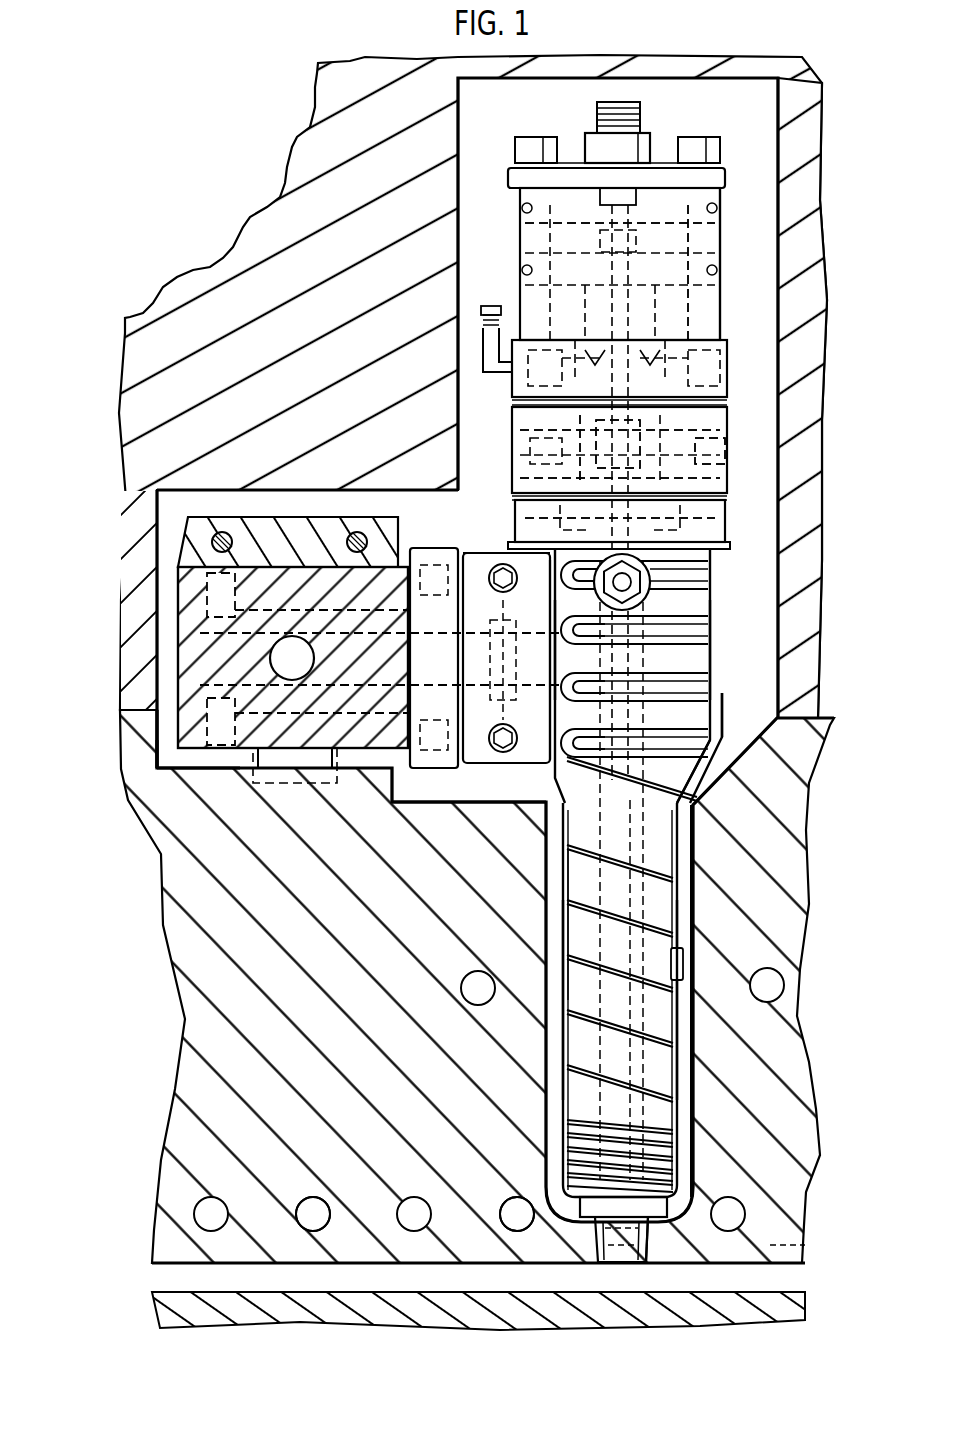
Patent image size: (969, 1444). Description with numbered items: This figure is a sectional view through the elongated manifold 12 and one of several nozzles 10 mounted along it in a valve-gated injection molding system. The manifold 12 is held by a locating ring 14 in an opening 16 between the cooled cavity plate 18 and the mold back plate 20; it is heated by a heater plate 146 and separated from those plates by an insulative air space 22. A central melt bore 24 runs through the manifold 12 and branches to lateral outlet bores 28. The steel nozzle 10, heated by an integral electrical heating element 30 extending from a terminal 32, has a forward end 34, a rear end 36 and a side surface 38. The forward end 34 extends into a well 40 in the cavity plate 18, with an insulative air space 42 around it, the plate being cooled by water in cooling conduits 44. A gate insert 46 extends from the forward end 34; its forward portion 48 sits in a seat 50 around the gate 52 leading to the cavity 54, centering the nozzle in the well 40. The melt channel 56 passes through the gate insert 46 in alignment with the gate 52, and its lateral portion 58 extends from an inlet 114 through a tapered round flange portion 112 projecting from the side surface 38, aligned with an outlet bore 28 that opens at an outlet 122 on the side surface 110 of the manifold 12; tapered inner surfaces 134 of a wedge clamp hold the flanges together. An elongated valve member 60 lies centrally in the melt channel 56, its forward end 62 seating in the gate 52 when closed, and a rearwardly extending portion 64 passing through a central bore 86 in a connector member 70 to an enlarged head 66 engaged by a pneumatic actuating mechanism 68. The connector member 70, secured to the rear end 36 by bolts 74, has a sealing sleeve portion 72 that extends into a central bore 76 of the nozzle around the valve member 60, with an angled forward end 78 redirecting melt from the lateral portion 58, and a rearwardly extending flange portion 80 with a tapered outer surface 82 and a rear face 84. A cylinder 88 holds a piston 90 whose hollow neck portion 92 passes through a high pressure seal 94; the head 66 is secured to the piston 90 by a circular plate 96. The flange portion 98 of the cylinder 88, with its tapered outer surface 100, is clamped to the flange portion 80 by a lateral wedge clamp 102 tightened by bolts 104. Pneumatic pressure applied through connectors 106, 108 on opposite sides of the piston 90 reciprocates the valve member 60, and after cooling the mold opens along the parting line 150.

The nozzle 10 is at (750, 695).
The manifold 12 is at (180, 632).
The locating ring 14 is at (175, 780).
The opening 16 is at (165, 752).
The cavity plate 18 is at (165, 935).
The mold back plate 20 is at (160, 310).
The insulative air space 22 is at (172, 580).
The central melt bore 24 is at (265, 660).
The lateral outlet bore 28 is at (318, 517).
The electrical heating element 30 is at (640, 872).
The terminal 32 is at (730, 605).
The forward end 34 is at (770, 1277).
The rear end 36 is at (740, 570).
The side surface 38 is at (548, 805).
The well 40 is at (695, 1118).
The insulative air space 42 is at (693, 1040).
The cooling conduits 44 is at (323, 1230).
The gate insert 46 is at (540, 1235).
The forward portion 48 is at (648, 1225).
The seat 50 is at (602, 1245).
The gate 52 is at (622, 1227).
The cavity 54 is at (790, 1300).
The melt channel 56 is at (640, 1010).
The lateral portion 58 is at (660, 681).
The valve member 60 is at (625, 905).
The forward end 62 is at (665, 1258).
The rearwardly extending portion 64 is at (612, 478).
The enlarged head 66 is at (628, 248).
The pneumatic actuating mechanism 68 is at (720, 320).
The connector member 70 is at (735, 546).
The sealing sleeve portion 72 is at (720, 635).
The bolts 74 is at (665, 520).
The central bore 76 is at (715, 658).
The angled forward end 78 is at (722, 705).
The flange portion 80 is at (590, 455).
The tapered outer surface 82 is at (727, 492).
The rear face 84 is at (565, 430).
The central bore 86 is at (631, 582).
The cylinder 88 is at (700, 362).
The piston 90 is at (665, 270).
The hollow neck portion 92 is at (690, 300).
The high pressure seal 94 is at (745, 405).
The circular plate 96 is at (675, 228).
The flange portion 98 is at (700, 420).
The tapered outer surface 100 is at (715, 445).
The lateral wedge clamp 102 is at (730, 518).
The bolts 104 is at (740, 470).
The connector 106 is at (620, 100).
The connector 108 is at (490, 305).
The side surface 110 is at (428, 560).
The flange portion 112 is at (510, 755).
The inlet 114 is at (475, 765).
The outlet 122 is at (520, 600).
The tapered inner surfaces 134 is at (540, 640).
The heater plate 146 is at (175, 540).
The parting line 150 is at (795, 1250).